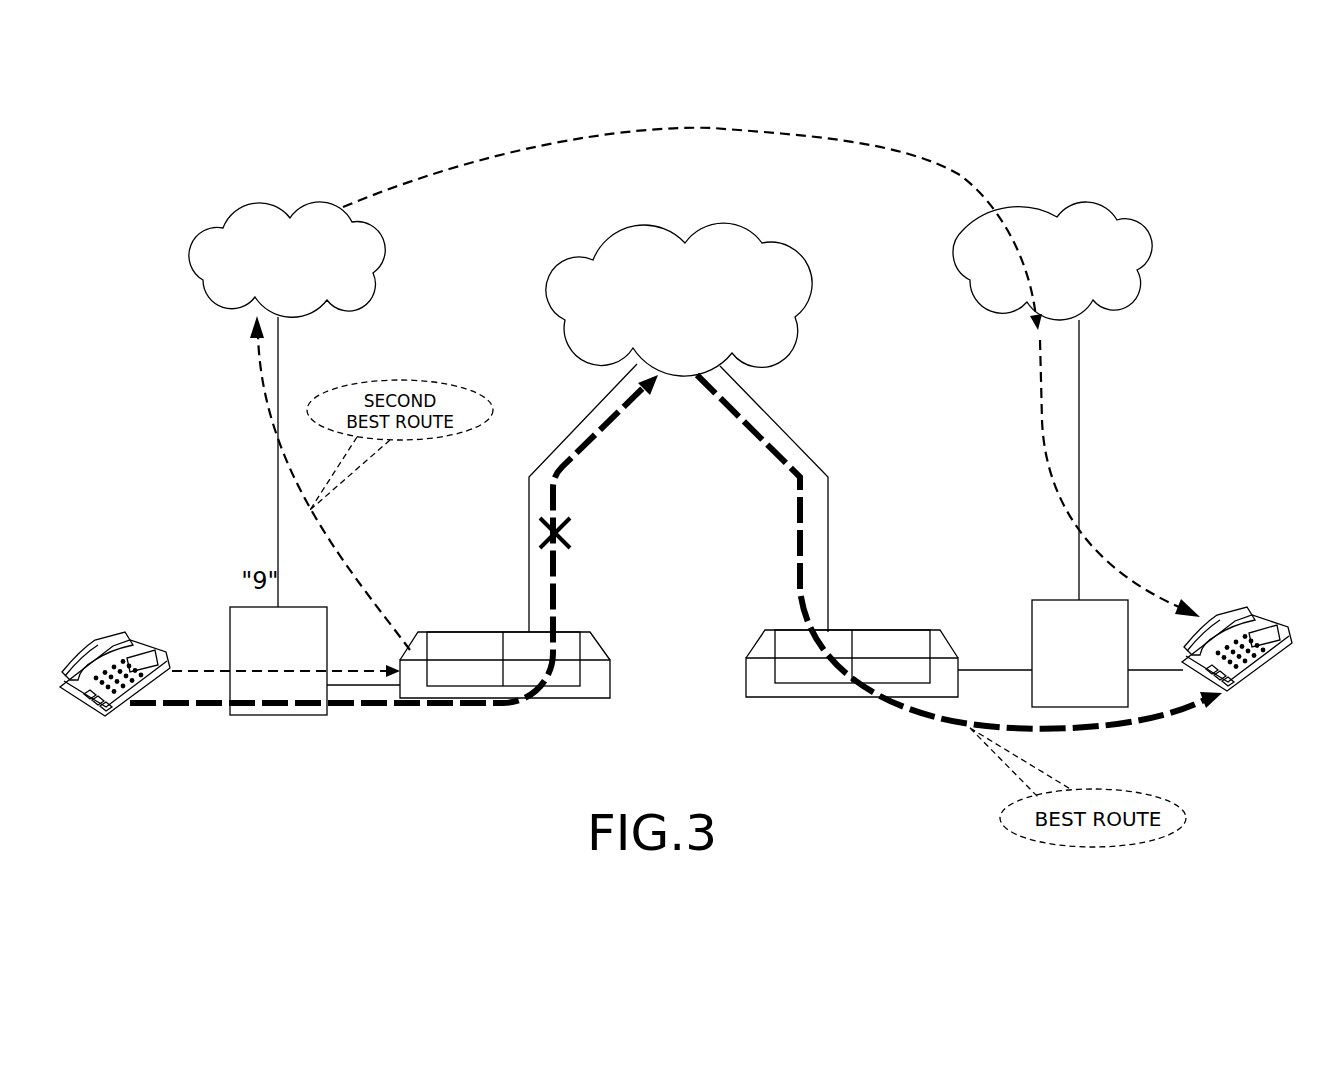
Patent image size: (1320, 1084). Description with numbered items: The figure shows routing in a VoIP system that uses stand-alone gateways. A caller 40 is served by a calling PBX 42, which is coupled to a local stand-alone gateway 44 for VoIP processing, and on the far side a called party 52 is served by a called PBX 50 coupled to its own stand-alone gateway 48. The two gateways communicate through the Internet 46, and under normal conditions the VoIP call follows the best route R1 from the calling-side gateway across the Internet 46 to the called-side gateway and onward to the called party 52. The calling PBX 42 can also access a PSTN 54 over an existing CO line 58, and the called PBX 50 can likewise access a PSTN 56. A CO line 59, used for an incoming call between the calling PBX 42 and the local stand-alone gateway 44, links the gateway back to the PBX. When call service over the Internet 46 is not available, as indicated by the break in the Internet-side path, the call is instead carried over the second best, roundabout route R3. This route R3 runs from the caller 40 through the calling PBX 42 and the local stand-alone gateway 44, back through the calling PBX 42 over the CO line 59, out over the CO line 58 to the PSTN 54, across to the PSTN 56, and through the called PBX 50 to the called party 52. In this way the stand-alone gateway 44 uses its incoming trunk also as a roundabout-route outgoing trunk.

The caller 40 is at (132, 638).
The calling PBX 42 is at (250, 607).
The local stand-alone gateway 44 is at (480, 632).
The Internet 46 is at (760, 238).
The stand-alone gateway 48 is at (920, 630).
The called PBX 50 is at (1048, 600).
The called party 52 is at (1247, 607).
The PSTN 54 is at (253, 202).
The PSTN 56 is at (1092, 203).
The CO line 58 is at (280, 358).
The CO line 59 is at (362, 690).
The best route R1 is at (570, 470).
The roundabout route R3 is at (616, 135).